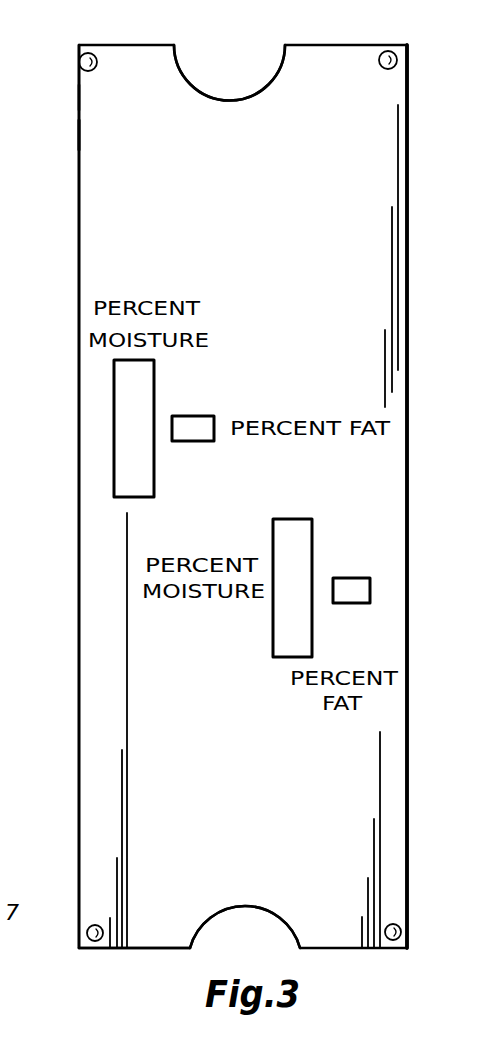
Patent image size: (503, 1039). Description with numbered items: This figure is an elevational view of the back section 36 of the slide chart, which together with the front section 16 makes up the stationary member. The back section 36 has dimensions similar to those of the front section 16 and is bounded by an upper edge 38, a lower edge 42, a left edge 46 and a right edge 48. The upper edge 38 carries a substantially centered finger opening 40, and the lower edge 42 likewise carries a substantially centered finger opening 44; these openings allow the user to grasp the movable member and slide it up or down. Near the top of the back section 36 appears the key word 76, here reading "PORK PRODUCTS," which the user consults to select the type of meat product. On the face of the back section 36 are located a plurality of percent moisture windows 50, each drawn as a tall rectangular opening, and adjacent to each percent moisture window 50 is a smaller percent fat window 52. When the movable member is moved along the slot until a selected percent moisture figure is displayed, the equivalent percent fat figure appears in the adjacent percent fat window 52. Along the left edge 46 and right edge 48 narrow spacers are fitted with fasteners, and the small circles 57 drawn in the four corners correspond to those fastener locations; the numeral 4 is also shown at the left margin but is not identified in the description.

The upper edge 38 is at (322, 44).
The finger opening 40 is at (212, 63).
The finger opening 44 is at (270, 934).
The left edge 46 is at (78, 735).
The right edge 48 is at (410, 745).
The lower edge 42 is at (136, 950).
The mounting holes 57 is at (78, 62).
The percent moisture window 50 is at (122, 386).
The percent fat window 52 is at (186, 425).
The key word 76 is at (101, 183).
The label 4 is at (92, 130).
The back section 36 is at (51, 135).
The front section 16 is at (45, 95).